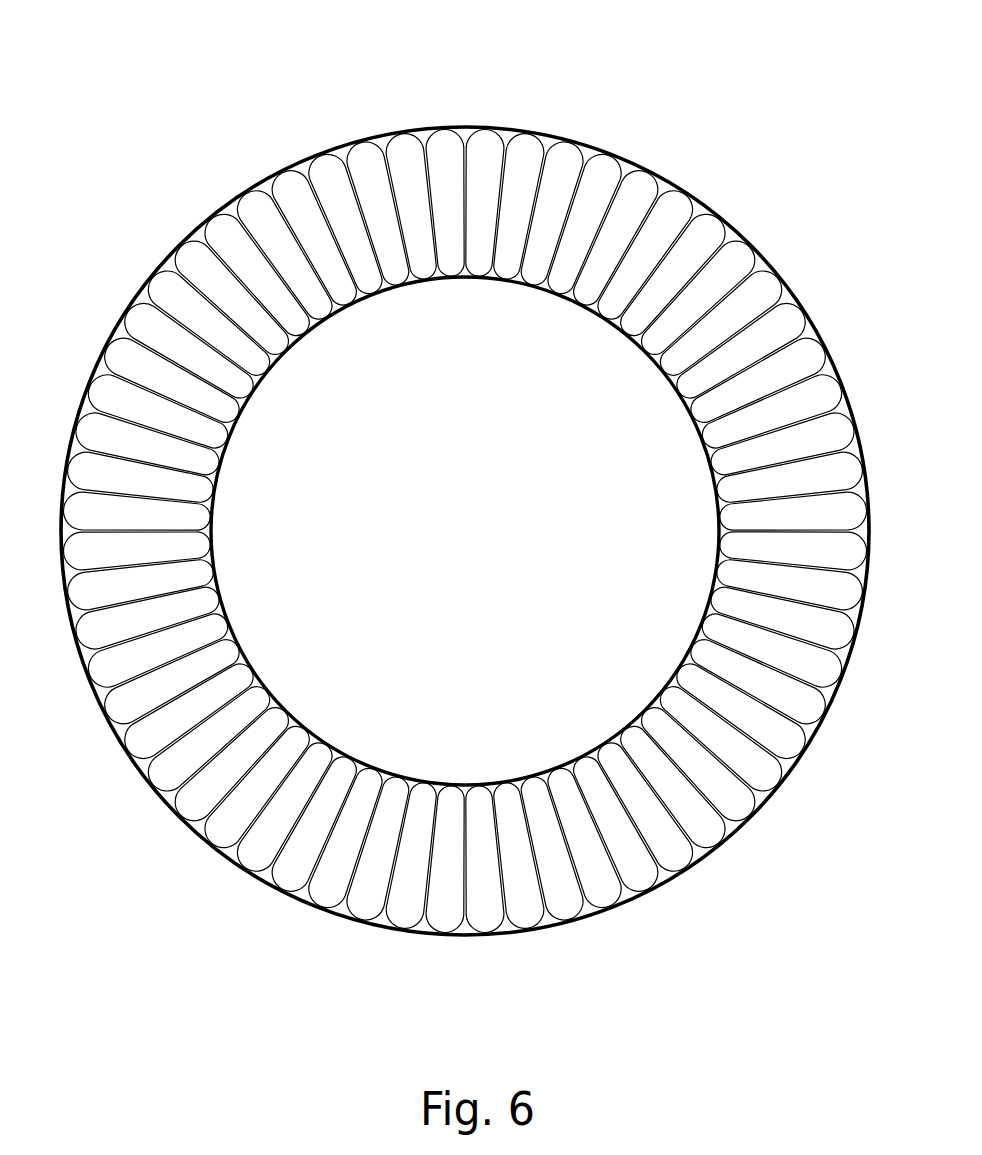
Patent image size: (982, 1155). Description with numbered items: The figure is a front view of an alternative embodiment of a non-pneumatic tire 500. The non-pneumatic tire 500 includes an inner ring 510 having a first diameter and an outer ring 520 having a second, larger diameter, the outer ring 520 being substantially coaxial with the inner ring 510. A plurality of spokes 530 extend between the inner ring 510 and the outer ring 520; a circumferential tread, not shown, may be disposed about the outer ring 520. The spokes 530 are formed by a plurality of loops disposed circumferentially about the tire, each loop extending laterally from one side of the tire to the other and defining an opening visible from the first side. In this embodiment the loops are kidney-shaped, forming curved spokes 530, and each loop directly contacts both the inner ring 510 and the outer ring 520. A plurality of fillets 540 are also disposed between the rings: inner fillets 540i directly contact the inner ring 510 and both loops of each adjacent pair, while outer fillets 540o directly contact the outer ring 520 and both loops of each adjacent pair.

The non-pneumatic tire 500 is at (463, 468).
The inner ring 510 is at (598, 334).
The outer ring 520 is at (496, 114).
The spokes 530 is at (147, 369).
The fillets 540 is at (455, 478).
The outer fillets 540o is at (465, 478).
The inner fillets 540i is at (465, 531).